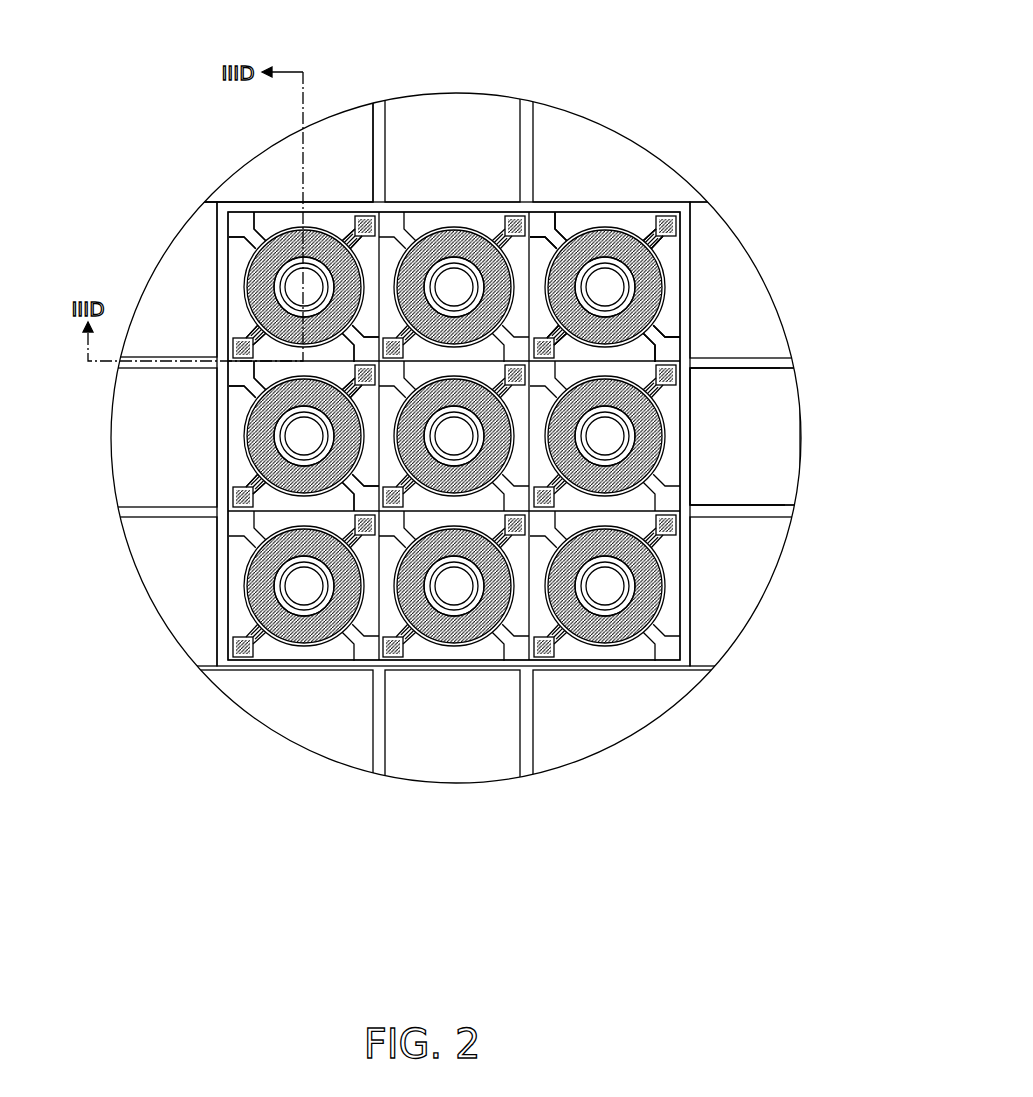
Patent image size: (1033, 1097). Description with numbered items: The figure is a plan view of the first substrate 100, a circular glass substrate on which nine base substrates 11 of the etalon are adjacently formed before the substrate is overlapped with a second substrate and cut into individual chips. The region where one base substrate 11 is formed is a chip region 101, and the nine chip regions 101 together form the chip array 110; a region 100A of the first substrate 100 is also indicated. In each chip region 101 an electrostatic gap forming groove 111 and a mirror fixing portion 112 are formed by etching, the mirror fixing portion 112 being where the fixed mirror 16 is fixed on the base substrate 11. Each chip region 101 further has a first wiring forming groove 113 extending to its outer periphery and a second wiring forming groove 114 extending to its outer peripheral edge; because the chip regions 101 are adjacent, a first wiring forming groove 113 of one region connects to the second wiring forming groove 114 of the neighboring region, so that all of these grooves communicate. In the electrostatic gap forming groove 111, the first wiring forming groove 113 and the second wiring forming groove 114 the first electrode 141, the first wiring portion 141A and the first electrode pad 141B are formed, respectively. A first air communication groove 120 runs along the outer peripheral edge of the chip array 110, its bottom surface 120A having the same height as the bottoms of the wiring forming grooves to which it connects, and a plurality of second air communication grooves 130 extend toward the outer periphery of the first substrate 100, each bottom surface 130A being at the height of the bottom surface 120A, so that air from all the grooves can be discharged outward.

The first substrate 100 is at (660, 67).
The element region 100A is at (272, 157).
The chip array 110 is at (408, 664).
The chip region 101 is at (423, 213).
The base substrate 11 is at (525, 436).
The electrostatic gap forming groove 111 is at (448, 240).
The mirror fixing portion 112 is at (298, 243).
The fixed mirror 16 is at (318, 268).
The first wiring forming groove 113 is at (513, 213).
The second wiring forming groove 114 is at (508, 272).
The first air communication groove 120 is at (695, 380).
The bottom surface 120A is at (693, 398).
The second air communication groove 130 is at (400, 113).
The bottom surface 130A is at (713, 505).
The first electrode 141 is at (245, 262).
The first wiring portion 141A is at (262, 320).
The first electrode pad 141B is at (243, 376).